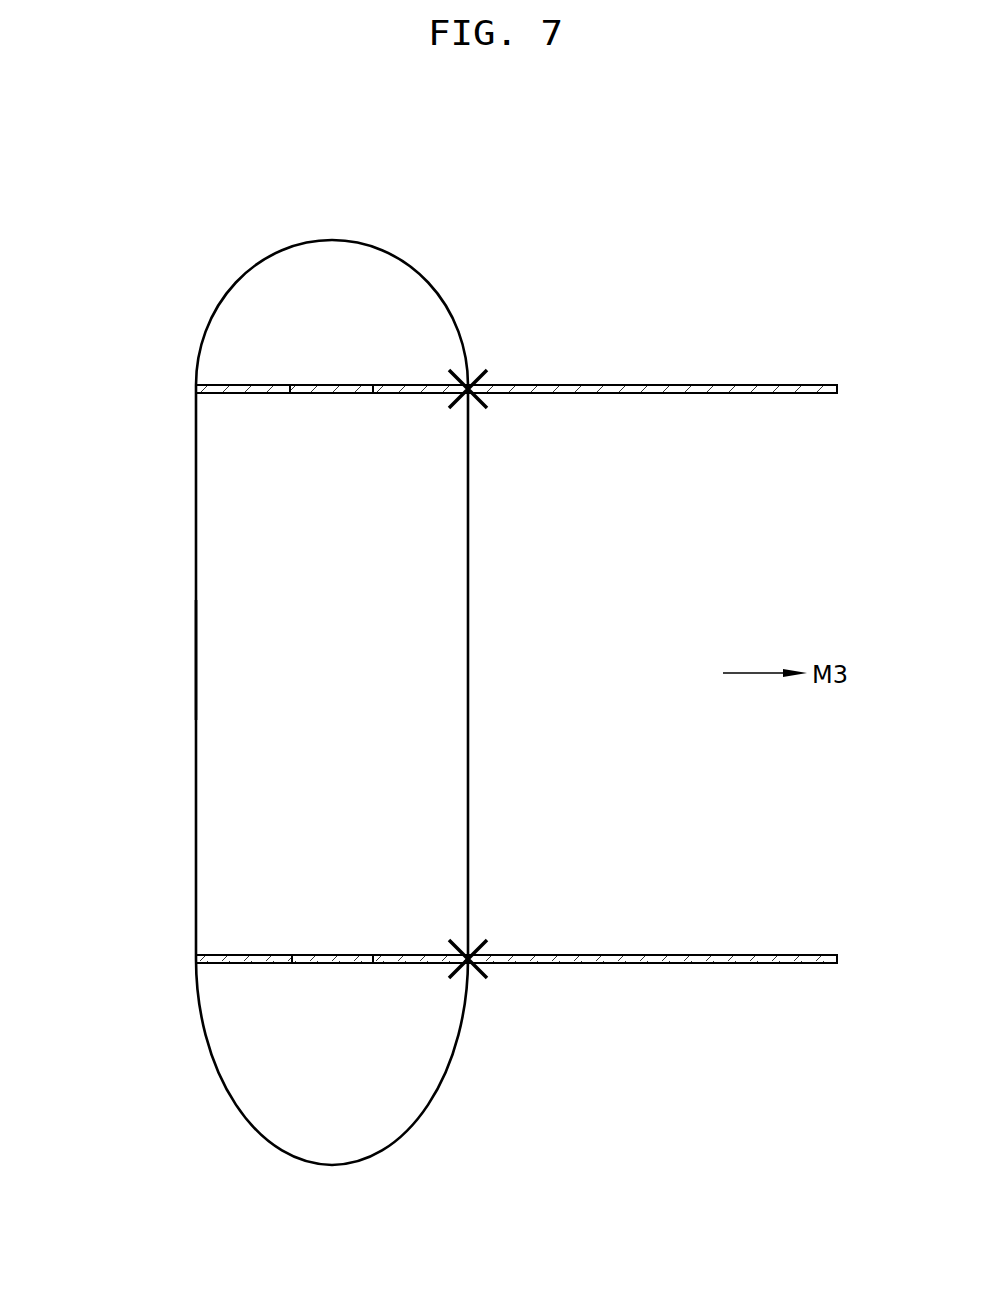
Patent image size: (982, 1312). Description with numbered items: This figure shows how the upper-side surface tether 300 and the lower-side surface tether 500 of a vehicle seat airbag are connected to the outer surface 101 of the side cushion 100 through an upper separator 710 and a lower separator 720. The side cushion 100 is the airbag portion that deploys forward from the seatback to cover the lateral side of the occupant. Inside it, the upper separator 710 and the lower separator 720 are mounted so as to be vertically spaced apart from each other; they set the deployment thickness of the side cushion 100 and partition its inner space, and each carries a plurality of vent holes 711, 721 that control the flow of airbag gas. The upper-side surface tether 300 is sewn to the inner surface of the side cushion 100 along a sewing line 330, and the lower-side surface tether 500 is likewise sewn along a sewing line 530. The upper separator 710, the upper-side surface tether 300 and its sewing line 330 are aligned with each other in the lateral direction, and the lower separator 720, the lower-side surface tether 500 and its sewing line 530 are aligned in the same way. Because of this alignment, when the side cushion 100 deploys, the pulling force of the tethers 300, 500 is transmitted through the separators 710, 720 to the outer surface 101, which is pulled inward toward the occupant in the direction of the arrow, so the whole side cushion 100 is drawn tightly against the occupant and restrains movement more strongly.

The side cushion 100 is at (220, 578).
The outer surface of the side cushion 101 is at (196, 658).
The upper-side surface tether 300 is at (738, 385).
The sewing line 330 is at (483, 370).
The lower-side surface tether 500 is at (683, 963).
The sewing line 530 is at (480, 980).
The upper separator 710 is at (241, 385).
The vent holes 711 is at (327, 387).
The lower separator 720 is at (265, 955).
The vent holes 721 is at (338, 955).